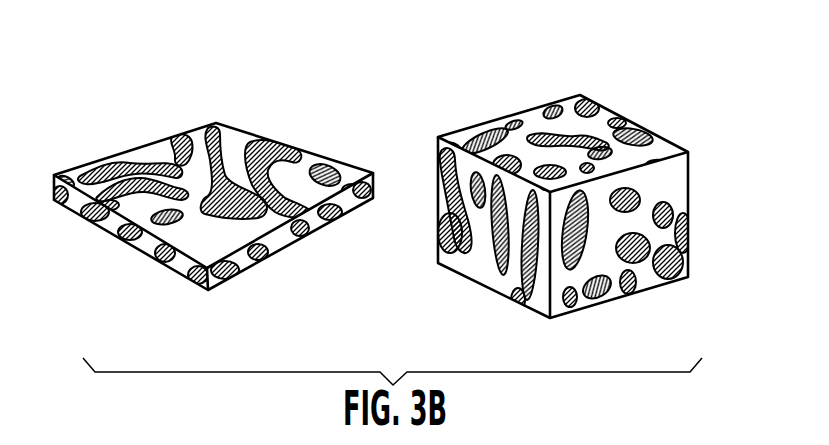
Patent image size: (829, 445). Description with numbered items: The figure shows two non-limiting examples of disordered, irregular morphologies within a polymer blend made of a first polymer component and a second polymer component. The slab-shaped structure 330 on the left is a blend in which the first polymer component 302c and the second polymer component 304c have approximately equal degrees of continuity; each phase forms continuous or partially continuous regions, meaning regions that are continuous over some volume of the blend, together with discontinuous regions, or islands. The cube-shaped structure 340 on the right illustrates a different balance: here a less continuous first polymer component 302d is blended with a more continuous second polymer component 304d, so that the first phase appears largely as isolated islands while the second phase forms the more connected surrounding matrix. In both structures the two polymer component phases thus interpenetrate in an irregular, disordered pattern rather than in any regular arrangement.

The structure 330 is at (190, 70).
The first polymer component 302c is at (153, 247).
The second polymer component 304c is at (219, 272).
The structure 340 is at (551, 70).
The first polymer component 302d is at (475, 217).
The second polymer component 304d is at (510, 275).